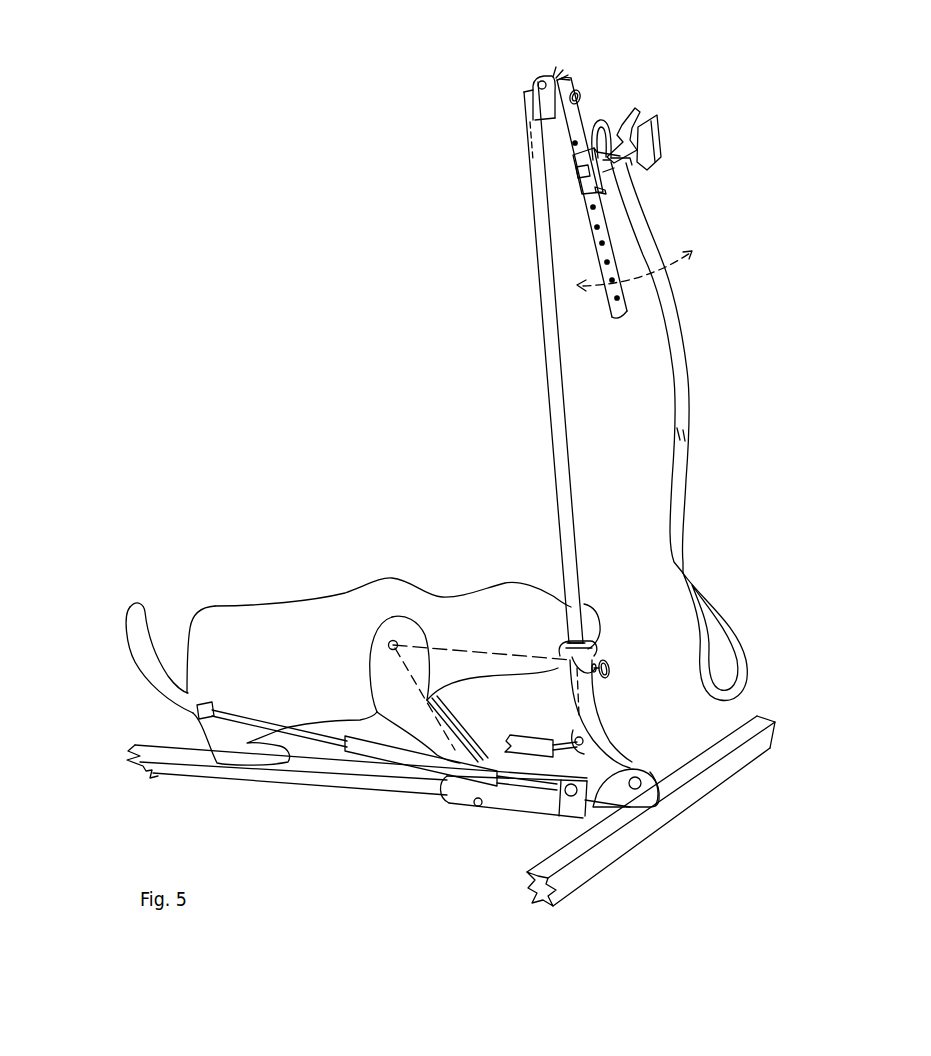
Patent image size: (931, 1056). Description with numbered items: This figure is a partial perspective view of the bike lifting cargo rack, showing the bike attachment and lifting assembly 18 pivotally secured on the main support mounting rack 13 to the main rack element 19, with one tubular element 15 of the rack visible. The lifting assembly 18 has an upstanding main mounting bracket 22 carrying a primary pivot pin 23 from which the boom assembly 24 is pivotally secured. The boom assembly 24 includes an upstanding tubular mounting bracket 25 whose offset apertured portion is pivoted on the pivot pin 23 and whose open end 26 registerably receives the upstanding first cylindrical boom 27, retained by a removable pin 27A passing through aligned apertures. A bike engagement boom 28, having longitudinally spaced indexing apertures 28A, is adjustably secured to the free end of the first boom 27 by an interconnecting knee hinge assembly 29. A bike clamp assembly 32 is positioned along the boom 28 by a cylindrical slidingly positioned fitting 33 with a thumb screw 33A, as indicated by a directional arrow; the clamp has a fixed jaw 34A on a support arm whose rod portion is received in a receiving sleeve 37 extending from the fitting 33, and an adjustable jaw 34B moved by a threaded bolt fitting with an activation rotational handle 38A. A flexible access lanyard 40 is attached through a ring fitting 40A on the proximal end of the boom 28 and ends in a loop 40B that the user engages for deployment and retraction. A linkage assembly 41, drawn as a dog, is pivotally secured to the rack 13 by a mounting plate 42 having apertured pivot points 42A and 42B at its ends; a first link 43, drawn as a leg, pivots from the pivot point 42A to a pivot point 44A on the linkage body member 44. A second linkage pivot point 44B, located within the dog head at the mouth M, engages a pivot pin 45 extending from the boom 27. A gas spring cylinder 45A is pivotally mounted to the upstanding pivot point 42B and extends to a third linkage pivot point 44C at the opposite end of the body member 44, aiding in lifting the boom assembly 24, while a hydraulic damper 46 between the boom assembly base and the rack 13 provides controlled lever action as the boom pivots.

The main support mounting rack 13 is at (765, 705).
The tubular element 15 is at (707, 780).
The bike lift mounting assembly 18 is at (395, 547).
The main rack element 19 is at (320, 786).
The upstanding main mounting bracket 22 is at (657, 810).
The primary pivot pin 23 is at (636, 784).
The boom assembly 24 is at (633, 627).
The upstanding tubular mounting bracket 25 is at (580, 708).
The open end 26 is at (600, 657).
The first cylindrical boom 27 is at (553, 410).
The removable pin 27A is at (567, 673).
The bike engagement boom 28 is at (586, 217).
The indexing apertures 28A is at (617, 298).
The knee hinge assembly 29 is at (557, 78).
The bike clamp assembly 32 is at (648, 99).
The cylindrical slidingly positioned fitting 33 is at (578, 183).
The thumb screw 33A is at (575, 165).
The fixed jaw 34A is at (660, 152).
The adjustable jaw 34B is at (655, 125).
The receiving sleeve 37 is at (620, 158).
The activation rotational handle 38A is at (684, 102).
The flexible access lanyard 40 is at (683, 402).
The ring fitting 40A is at (581, 95).
The loop 40B is at (740, 640).
The linkage assembly 41 is at (244, 604).
The mounting plate 42 is at (520, 806).
The apertured pivot point 42A is at (449, 801).
The apertured upstanding pivot point 42B is at (590, 822).
The first link 43 is at (383, 678).
The linkage body member 44 is at (323, 616).
The pivot point 44A is at (388, 625).
The second linkage pivot point 44B is at (608, 683).
The third linkage pivot point 44C is at (190, 716).
The pivot pin 45 is at (555, 656).
The gas spring cylinder 45A is at (410, 778).
The hydraulic damper 46 is at (499, 798).
The mouth M is at (585, 638).